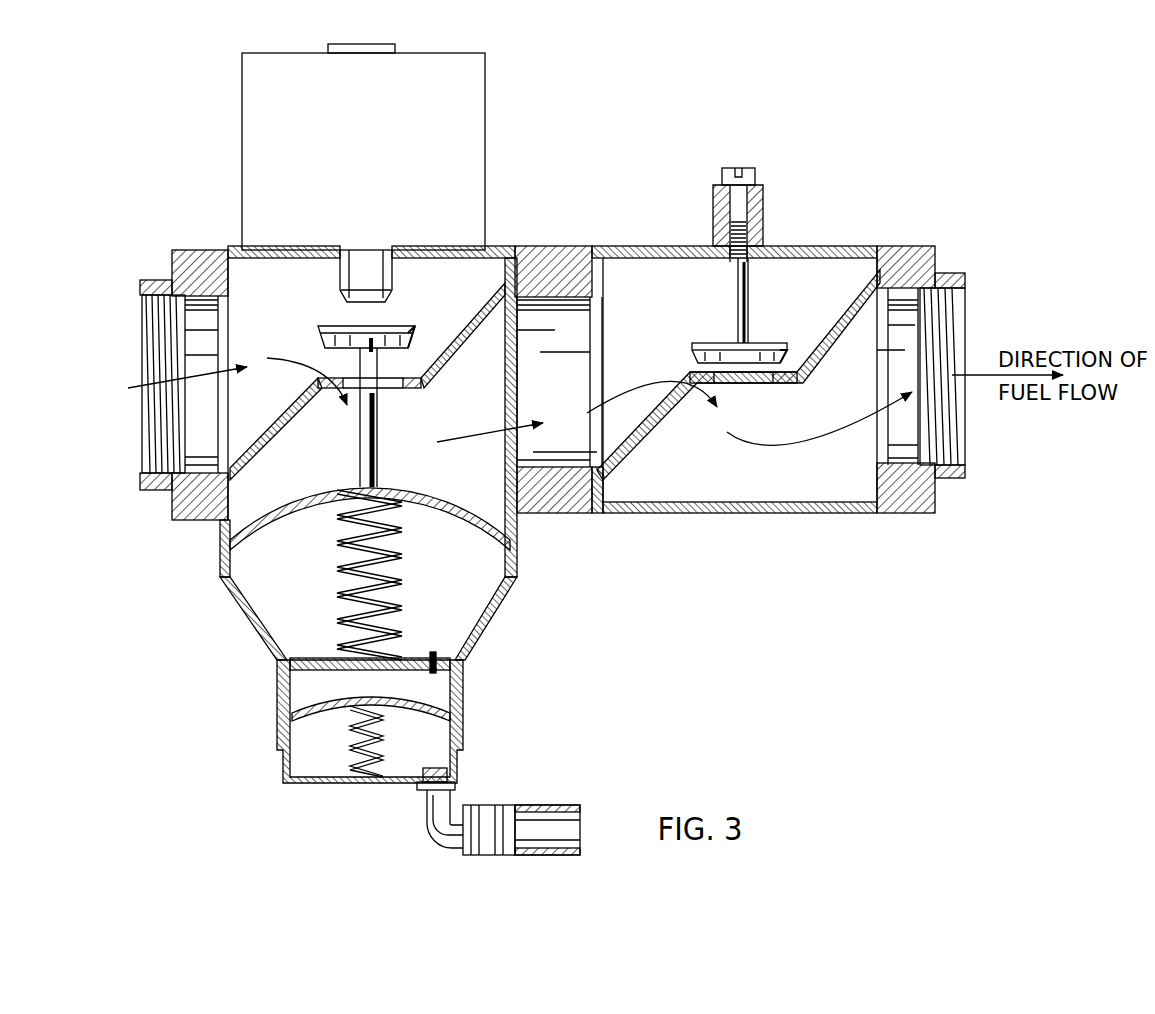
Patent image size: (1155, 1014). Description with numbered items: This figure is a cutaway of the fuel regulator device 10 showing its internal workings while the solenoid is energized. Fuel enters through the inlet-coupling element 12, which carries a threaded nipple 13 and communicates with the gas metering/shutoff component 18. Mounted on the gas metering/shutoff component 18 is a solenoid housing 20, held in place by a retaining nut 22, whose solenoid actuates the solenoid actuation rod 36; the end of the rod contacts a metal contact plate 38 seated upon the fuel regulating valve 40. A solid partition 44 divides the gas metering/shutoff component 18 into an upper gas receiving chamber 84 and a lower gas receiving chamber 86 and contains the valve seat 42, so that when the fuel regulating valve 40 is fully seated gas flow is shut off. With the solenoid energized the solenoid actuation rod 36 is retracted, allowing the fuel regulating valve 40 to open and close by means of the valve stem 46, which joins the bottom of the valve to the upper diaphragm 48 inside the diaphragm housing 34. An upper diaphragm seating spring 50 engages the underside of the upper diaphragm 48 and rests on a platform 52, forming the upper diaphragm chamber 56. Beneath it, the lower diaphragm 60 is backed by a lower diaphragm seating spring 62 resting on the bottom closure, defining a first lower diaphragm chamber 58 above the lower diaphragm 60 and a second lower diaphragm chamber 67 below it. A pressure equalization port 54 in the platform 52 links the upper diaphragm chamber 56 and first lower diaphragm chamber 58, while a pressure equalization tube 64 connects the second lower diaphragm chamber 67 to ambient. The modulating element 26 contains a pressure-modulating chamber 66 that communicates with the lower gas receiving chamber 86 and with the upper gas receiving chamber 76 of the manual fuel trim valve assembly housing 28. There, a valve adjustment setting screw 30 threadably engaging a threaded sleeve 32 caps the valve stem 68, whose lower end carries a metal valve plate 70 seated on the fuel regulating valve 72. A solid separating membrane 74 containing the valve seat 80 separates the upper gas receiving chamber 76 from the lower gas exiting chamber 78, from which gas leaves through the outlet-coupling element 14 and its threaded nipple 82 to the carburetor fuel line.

The fuel regulator device 10 is at (761, 100).
The inlet-coupling element 12 is at (186, 248).
The threaded nipple 13 is at (145, 488).
The outlet-coupling element 14 is at (935, 244).
The gas metering/shutoff component 18 is at (230, 246).
The solenoid housing 20 is at (490, 145).
The retaining nut 22 is at (373, 44).
The modulating element 26 is at (565, 246).
The manual fuel trim valve assembly housing 28 is at (840, 246).
The valve adjustment setting screw 30 is at (726, 170).
The threaded sleeve 32 is at (762, 215).
The diaphragm housing 34 is at (243, 628).
The solenoid actuation rod 36 is at (393, 273).
The metal contact plate 38 is at (343, 325).
The fuel regulating valve 40 is at (415, 340).
The valve seat 42 is at (414, 375).
The solid partition 44 is at (270, 440).
The valve stem 46 is at (377, 433).
The upper diaphragm 48 is at (432, 490).
The upper diaphragm seating spring 50 is at (400, 577).
The platform 52 is at (318, 657).
The pressure equalization port 54 is at (429, 652).
The upper diaphragm chamber 56 is at (291, 577).
The first lower diaphragm chamber 58 is at (295, 695).
The lower diaphragm 60 is at (435, 716).
The lower diaphragm seating spring 62 is at (352, 777).
The pressure equalization tube 64 is at (540, 805).
The pressure-modulating chamber 66 is at (540, 390).
The second lower diaphragm chamber 67 is at (300, 764).
The valve stem 68 is at (748, 298).
The metal valve plate 70 is at (725, 343).
The fuel regulating valve 72 is at (698, 368).
The solid separating membrane 74 is at (640, 432).
The upper gas receiving chamber 76 is at (618, 293).
The lower gas exiting chamber 78 is at (805, 487).
The valve seat 80 is at (795, 362).
The threaded nipple 82 is at (965, 275).
The upper gas receiving chamber 84 is at (246, 330).
The lower gas receiving chamber 86 is at (468, 379).